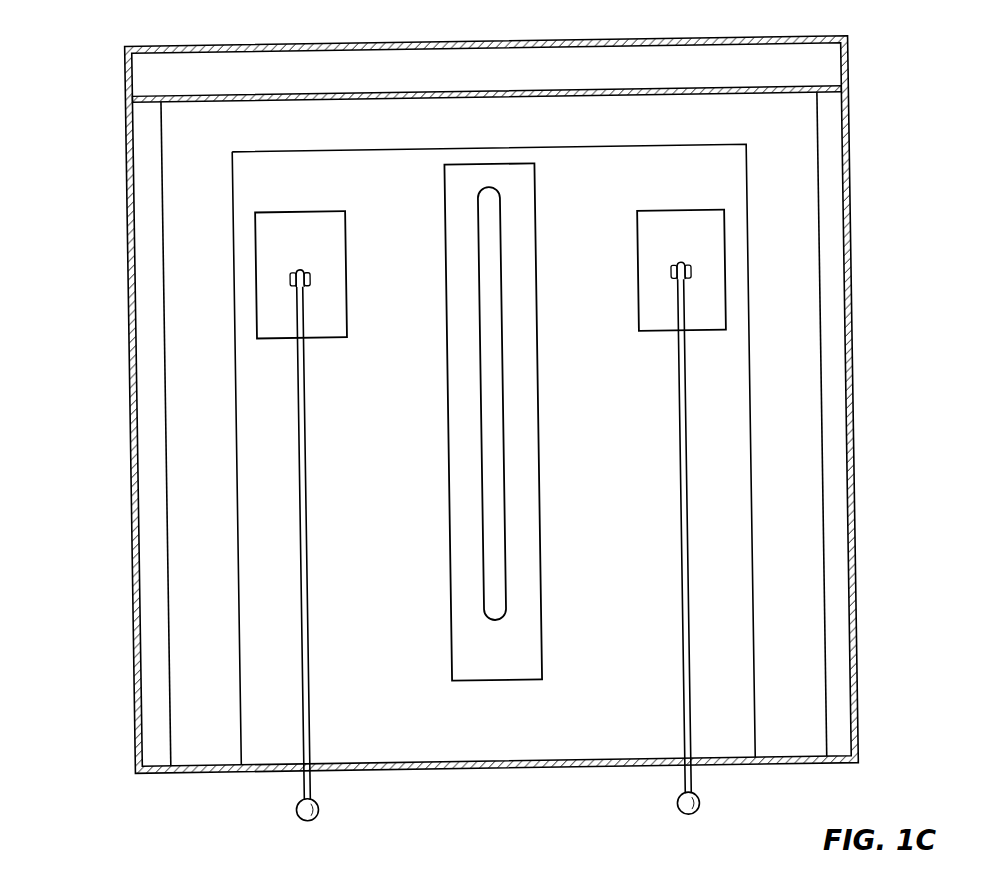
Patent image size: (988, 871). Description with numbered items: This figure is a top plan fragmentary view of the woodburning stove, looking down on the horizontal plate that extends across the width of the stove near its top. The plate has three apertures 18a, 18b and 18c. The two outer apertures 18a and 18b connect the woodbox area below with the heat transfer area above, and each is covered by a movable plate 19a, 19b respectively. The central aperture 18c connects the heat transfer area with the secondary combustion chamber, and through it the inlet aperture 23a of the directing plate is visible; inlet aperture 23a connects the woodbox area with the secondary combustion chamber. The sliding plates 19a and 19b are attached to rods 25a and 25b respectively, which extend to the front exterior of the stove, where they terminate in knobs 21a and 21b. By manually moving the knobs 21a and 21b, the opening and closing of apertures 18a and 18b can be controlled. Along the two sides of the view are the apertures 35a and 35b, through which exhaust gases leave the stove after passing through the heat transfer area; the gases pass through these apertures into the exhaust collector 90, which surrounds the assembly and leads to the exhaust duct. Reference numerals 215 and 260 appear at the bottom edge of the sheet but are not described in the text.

The exhaust collector 90 is at (570, 67).
The aperture 35a is at (153, 477).
The aperture 35b is at (835, 428).
The aperture 18a is at (322, 253).
The aperture 18b is at (672, 245).
The aperture 18c is at (520, 205).
The movable plate 19a is at (330, 308).
The movable plate 19b is at (652, 312).
The inlet aperture 23a is at (497, 428).
The rod 25a is at (308, 572).
The rod 25b is at (683, 493).
The knob 21a is at (297, 812).
The knob 21b is at (699, 808).
The element 215 is at (418, 870).
The element 260 is at (517, 870).